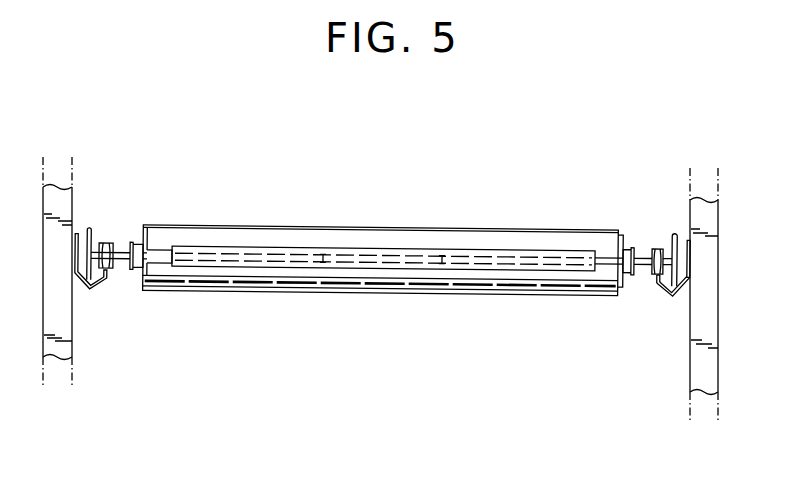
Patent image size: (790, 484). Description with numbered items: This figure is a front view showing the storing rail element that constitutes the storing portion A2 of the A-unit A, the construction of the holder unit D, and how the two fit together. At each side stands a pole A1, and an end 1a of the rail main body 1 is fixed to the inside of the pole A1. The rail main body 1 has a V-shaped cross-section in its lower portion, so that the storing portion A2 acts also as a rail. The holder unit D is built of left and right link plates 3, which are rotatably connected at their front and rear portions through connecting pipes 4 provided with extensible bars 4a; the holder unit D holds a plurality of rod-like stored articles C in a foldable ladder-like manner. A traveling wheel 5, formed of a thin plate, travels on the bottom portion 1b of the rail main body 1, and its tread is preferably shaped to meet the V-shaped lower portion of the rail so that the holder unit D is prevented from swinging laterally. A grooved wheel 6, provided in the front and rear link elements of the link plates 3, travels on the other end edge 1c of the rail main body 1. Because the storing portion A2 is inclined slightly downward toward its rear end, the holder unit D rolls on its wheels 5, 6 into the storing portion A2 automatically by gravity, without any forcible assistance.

The rail main body 1 is at (72, 275).
The end of the rail main body 1a is at (690, 248).
The bottom portion of the rail main body 1b is at (677, 295).
The other end edge of the rail main body 1c is at (655, 277).
The link plate 3 is at (137, 245).
The connecting pipe 4 is at (358, 270).
The extensible bar 4a is at (603, 260).
The traveling wheel 5 is at (675, 233).
The grooved wheel 6 is at (655, 248).
The A-unit A is at (668, 295).
The pole A1 is at (707, 373).
The storing portion A2 is at (82, 222).
The rod-like stored article C is at (452, 227).
The holder unit D is at (268, 274).